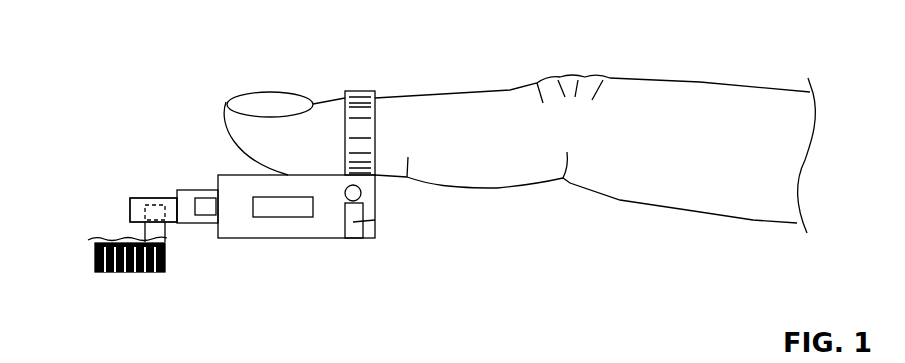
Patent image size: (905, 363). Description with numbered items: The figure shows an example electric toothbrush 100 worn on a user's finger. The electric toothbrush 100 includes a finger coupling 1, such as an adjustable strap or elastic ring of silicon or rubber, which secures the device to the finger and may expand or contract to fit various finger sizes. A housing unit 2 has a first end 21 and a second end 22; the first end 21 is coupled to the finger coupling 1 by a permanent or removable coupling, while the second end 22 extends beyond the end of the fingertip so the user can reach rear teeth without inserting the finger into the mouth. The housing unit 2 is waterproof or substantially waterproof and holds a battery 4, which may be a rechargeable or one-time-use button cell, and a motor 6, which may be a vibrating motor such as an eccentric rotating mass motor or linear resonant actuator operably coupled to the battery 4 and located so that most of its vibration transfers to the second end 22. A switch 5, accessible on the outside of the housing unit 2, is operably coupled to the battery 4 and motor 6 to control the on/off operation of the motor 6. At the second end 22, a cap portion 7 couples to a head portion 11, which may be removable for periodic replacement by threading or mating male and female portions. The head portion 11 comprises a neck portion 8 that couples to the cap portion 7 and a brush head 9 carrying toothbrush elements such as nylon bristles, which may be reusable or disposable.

The electric toothbrush 100 is at (172, 48).
The finger coupling 1 is at (362, 88).
The housing unit 2 is at (362, 193).
The battery 4 is at (375, 220).
The switch 5 is at (282, 217).
The motor 6 is at (203, 195).
The cap portion 7 is at (130, 205).
The neck portion 8 is at (140, 232).
The brush head 9 is at (88, 240).
The head portion 11 is at (128, 278).
The first end 21 is at (353, 238).
The second end 22 is at (155, 198).